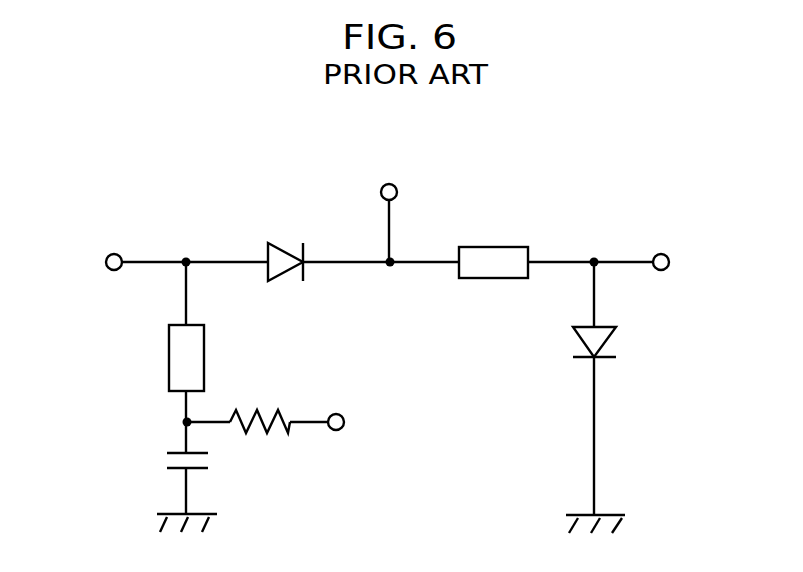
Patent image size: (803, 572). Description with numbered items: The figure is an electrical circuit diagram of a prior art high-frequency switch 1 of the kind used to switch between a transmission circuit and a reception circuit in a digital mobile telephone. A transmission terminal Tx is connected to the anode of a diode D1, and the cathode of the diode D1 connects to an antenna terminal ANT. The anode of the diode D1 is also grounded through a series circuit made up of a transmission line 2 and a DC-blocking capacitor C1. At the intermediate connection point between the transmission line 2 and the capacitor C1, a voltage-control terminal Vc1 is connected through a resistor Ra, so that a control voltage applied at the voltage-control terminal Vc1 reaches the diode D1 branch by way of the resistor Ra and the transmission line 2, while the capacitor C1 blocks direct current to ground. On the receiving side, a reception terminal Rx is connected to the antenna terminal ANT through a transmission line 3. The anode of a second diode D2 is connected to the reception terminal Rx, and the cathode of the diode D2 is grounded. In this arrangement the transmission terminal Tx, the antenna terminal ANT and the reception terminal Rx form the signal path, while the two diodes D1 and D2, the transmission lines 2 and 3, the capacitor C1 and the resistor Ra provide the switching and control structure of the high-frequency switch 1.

The high-frequency switch 1 is at (188, 235).
The transmission line 2 is at (204, 362).
The transmission line 3 is at (486, 279).
The diode D1 is at (280, 247).
The diode D2 is at (576, 333).
The DC-blocking capacitor C1 is at (178, 452).
The resistor Ra is at (250, 430).
The voltage-control terminal Vc1 is at (342, 429).
The transmission terminal Tx is at (112, 270).
The reception terminal Rx is at (661, 270).
The antenna terminal ANT is at (397, 190).